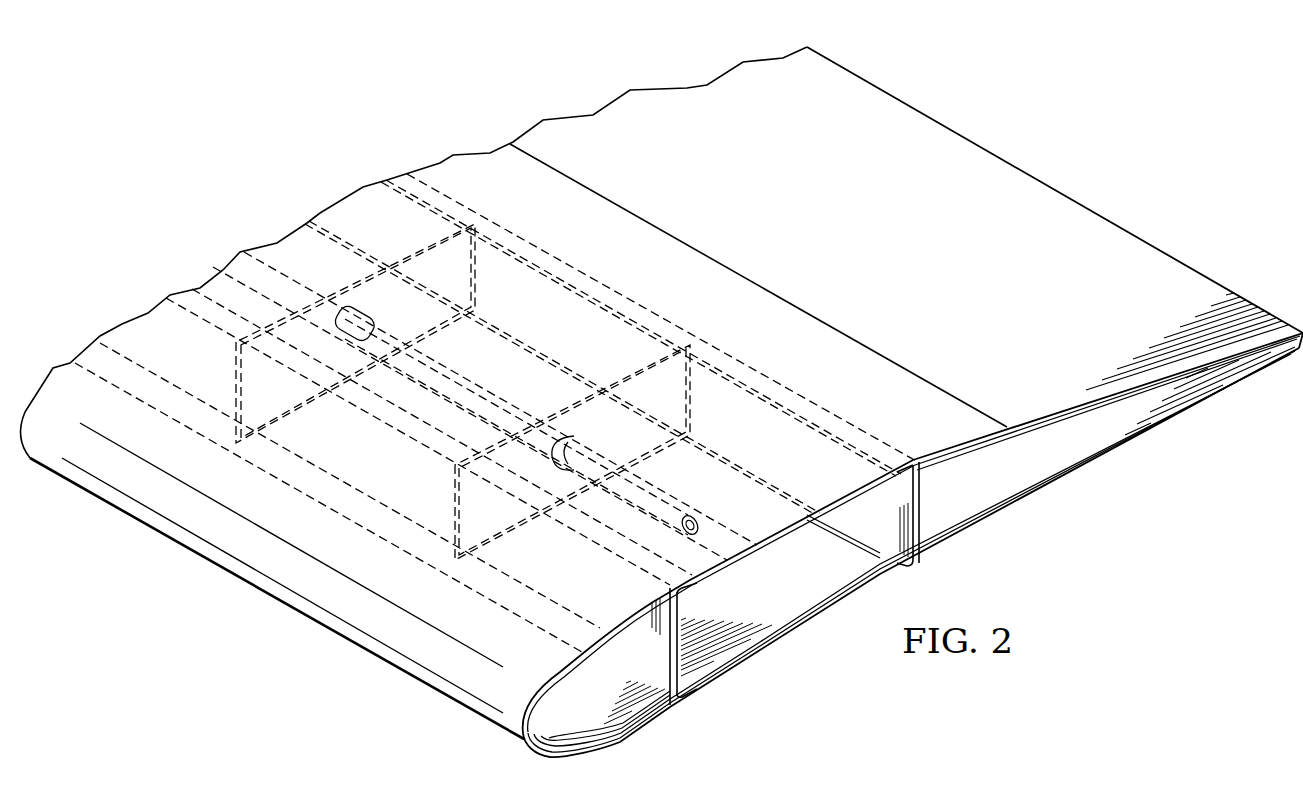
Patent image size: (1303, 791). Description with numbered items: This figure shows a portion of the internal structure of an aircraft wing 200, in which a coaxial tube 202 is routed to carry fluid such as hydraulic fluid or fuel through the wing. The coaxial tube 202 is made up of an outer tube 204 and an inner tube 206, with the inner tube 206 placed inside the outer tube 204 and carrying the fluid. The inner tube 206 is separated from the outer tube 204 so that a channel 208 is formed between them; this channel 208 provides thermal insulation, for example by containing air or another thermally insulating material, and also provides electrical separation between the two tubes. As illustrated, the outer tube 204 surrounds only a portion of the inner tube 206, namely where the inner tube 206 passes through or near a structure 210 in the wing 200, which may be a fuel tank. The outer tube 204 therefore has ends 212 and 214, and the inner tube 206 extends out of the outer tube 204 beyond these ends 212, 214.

The wing 200 is at (330, 165).
The coaxial tube 202 is at (417, 396).
The outer tube 204 is at (497, 386).
The inner tube 206 is at (675, 500).
The channel 208 is at (548, 448).
The structure 210 is at (479, 341).
The end 212 is at (340, 326).
The end 214 is at (570, 440).